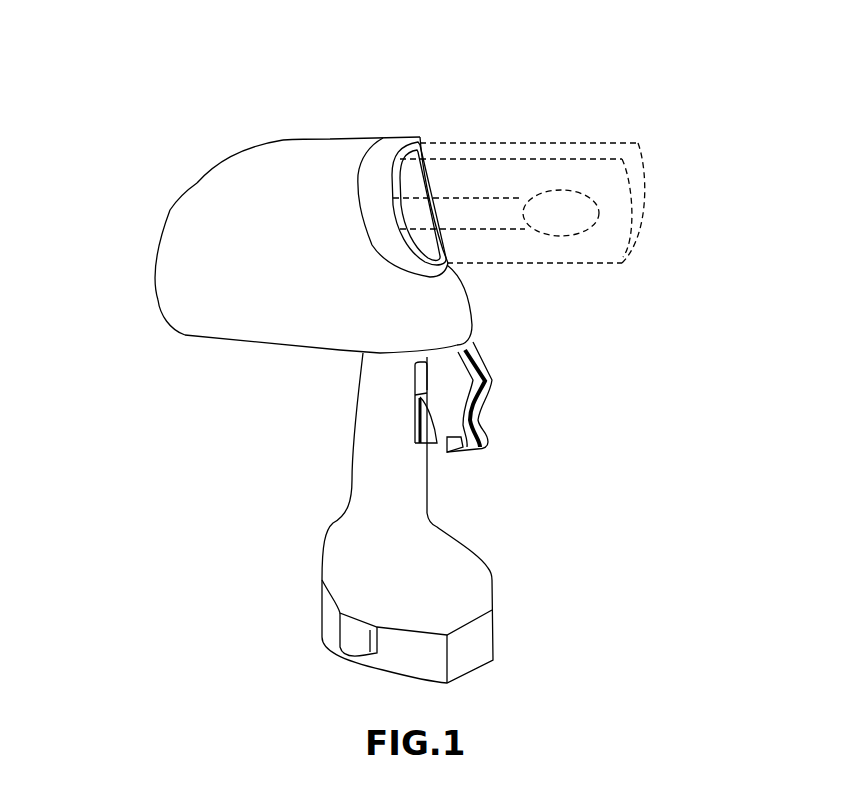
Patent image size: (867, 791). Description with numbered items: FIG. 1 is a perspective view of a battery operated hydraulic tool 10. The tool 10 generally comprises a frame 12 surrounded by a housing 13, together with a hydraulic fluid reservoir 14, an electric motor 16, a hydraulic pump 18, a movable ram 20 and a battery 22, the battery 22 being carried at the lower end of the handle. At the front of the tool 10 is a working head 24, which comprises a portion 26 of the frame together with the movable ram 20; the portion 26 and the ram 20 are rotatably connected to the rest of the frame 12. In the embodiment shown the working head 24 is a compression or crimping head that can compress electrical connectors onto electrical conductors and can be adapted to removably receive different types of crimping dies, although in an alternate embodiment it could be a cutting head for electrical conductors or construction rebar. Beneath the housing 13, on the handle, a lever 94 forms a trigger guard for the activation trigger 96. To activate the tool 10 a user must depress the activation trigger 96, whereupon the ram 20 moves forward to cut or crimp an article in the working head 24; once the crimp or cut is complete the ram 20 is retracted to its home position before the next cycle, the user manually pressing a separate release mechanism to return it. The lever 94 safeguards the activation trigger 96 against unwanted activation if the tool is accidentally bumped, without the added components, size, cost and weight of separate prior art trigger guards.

The tool 10 is at (128, 255).
The frame 12 is at (308, 185).
The housing 13 is at (243, 150).
The hydraulic fluid reservoir 14 is at (222, 218).
The electric motor 16 is at (230, 307).
The hydraulic pump 18 is at (345, 262).
The movable ram 20 is at (457, 213).
The battery 22 is at (473, 662).
The working head 24 is at (638, 143).
The portion of the frame 26 is at (630, 257).
The lever 94 is at (487, 418).
The activation trigger 96 is at (420, 443).